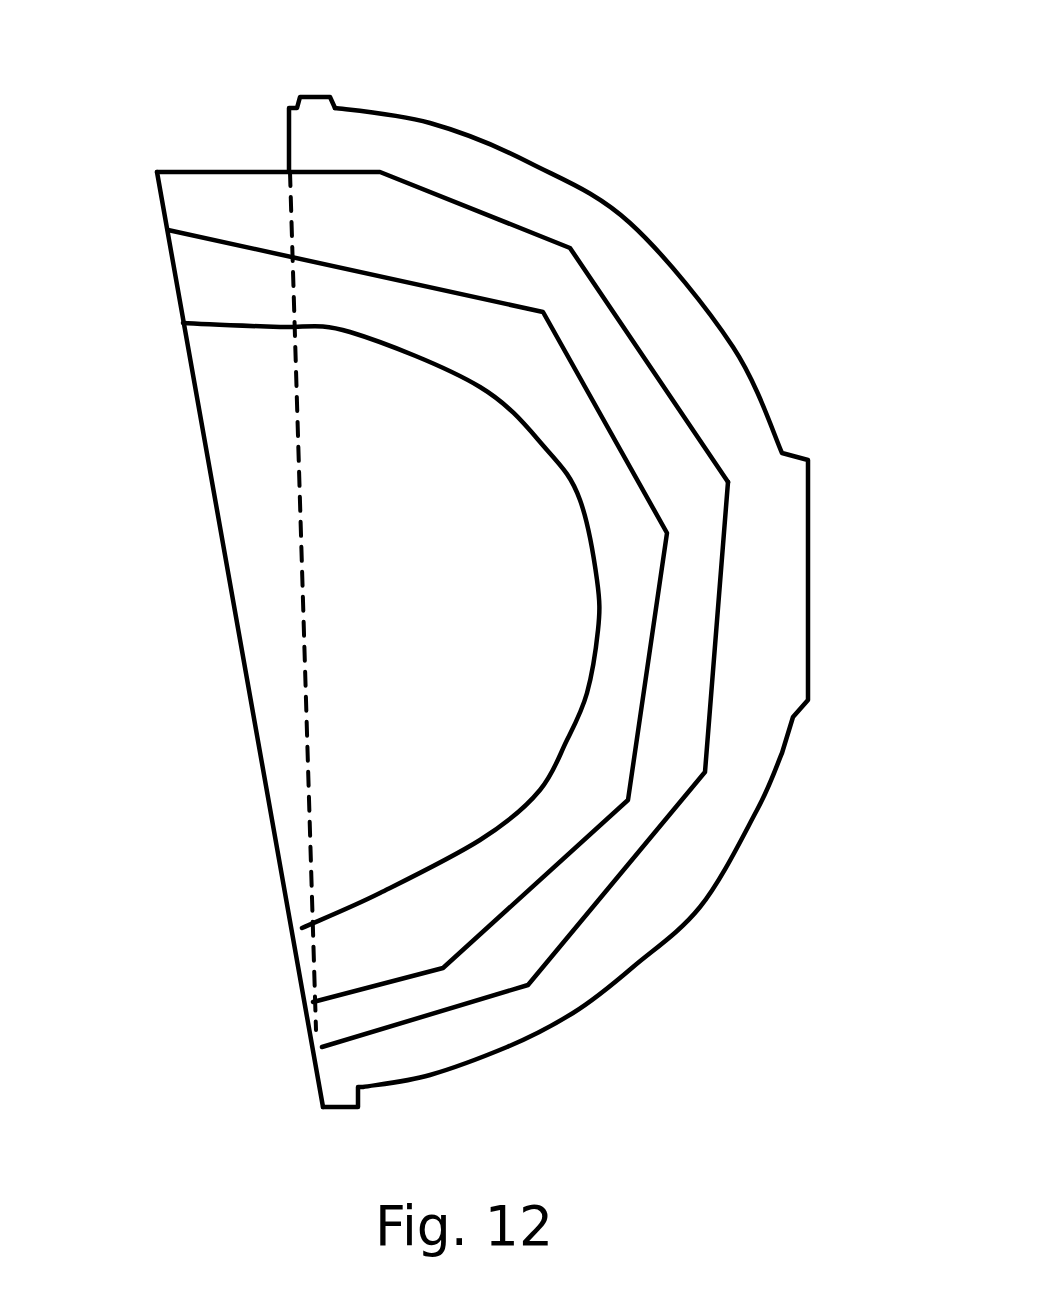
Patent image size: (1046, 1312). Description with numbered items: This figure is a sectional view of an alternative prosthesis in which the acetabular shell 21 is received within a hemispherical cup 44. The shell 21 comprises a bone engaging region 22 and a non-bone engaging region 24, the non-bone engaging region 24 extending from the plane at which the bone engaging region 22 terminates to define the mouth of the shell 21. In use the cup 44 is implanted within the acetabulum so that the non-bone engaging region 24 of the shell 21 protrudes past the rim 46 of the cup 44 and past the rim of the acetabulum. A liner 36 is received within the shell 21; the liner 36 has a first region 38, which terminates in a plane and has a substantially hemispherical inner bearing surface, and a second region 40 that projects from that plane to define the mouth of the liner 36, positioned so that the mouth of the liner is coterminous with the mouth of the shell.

The acetabular shell 21 is at (662, 745).
The bone engaging region 22 is at (698, 655).
The non-bone engaging region 24 is at (243, 193).
The liner 36 is at (380, 948).
The first region 38 is at (643, 560).
The second region 40 is at (208, 277).
The hemispherical cup 44 is at (712, 352).
The rim 46 is at (315, 110).